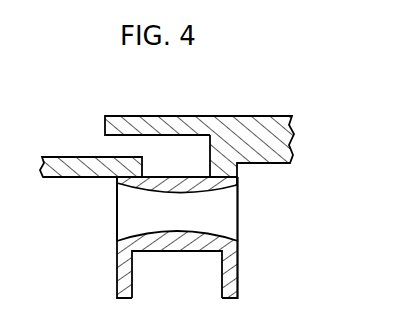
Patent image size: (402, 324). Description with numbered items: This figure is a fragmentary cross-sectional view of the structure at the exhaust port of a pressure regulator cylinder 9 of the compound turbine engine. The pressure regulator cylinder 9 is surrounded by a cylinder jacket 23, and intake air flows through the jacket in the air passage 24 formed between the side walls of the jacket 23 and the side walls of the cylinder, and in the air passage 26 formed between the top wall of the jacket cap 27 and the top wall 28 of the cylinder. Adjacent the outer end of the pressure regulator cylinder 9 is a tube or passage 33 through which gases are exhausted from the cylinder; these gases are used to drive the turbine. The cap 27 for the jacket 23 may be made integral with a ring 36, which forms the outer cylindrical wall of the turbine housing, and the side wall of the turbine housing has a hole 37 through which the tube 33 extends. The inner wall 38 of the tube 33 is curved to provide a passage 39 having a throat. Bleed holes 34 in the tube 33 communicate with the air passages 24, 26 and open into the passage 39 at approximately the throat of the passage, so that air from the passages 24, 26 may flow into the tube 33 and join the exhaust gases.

The pressure regulator cylinder 9 is at (119, 275).
The cylinder jacket 23 is at (232, 275).
The air passage 24 is at (192, 290).
The air passage 26 is at (115, 148).
The jacket cap 27 is at (181, 116).
The top wall of the cylinder 28 is at (70, 157).
The tube or passage 33 is at (236, 240).
The bleed hole 34 is at (169, 192).
The ring 36 is at (263, 120).
The hole 37 is at (237, 178).
The inner wall of the passage 38 is at (188, 193).
The passage 39 is at (178, 224).